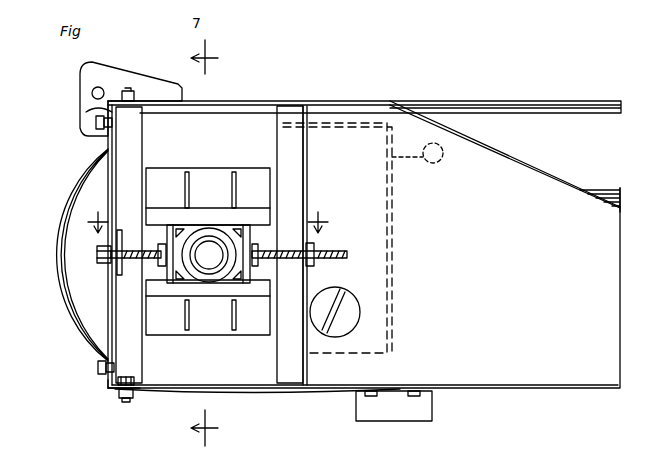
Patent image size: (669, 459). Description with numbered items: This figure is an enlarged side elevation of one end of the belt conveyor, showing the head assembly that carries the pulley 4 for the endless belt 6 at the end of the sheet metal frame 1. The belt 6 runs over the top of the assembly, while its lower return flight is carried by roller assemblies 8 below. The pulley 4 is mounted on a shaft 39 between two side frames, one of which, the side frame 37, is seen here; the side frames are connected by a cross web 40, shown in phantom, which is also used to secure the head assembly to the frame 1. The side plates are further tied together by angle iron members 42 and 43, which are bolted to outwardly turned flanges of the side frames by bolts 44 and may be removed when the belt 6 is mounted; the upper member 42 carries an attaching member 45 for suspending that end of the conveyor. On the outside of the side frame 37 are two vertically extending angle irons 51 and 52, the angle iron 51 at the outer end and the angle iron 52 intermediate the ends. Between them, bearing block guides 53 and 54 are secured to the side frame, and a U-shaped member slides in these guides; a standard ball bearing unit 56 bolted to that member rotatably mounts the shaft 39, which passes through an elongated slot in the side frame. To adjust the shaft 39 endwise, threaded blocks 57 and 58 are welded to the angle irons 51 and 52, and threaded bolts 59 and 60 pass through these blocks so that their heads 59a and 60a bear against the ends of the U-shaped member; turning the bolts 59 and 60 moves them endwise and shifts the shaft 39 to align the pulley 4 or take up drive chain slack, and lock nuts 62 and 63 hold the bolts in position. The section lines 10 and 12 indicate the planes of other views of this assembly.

The sheet metal frame 1 is at (622, 186).
The pulley 4 is at (333, 311).
The endless belt 6 is at (572, 108).
The roller assemblies 8 is at (432, 410).
The section line 10 is at (216, 58).
The section line 12 is at (206, 213).
The side frame 37 is at (490, 152).
The shaft 39 is at (204, 258).
The cross web 40 is at (417, 153).
The angle iron member 42 is at (98, 110).
The angle iron member 43 is at (108, 388).
The bolts 44 is at (130, 91).
The attaching member 45 is at (82, 85).
The angle iron 51 is at (138, 133).
The angle iron 52 is at (282, 130).
The bearing block guide 53 is at (207, 205).
The bearing block guide 54 is at (207, 293).
The ball bearing unit 56 is at (213, 262).
The threaded block 57 is at (120, 232).
The threaded block 58 is at (302, 228).
The threaded bolt 59 is at (126, 252).
The bolt head 59a is at (160, 265).
The threaded bolt 60 is at (325, 259).
The bolt head 60a is at (258, 262).
The lock nut 62 is at (105, 260).
The lock nut 63 is at (314, 250).